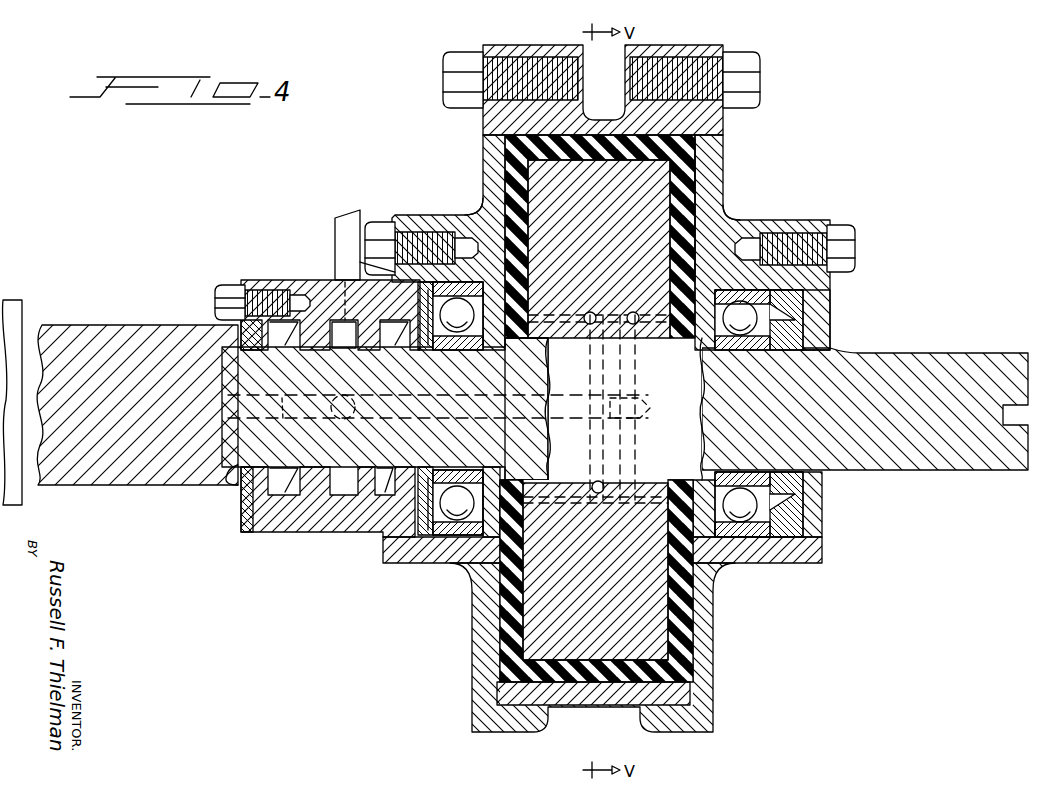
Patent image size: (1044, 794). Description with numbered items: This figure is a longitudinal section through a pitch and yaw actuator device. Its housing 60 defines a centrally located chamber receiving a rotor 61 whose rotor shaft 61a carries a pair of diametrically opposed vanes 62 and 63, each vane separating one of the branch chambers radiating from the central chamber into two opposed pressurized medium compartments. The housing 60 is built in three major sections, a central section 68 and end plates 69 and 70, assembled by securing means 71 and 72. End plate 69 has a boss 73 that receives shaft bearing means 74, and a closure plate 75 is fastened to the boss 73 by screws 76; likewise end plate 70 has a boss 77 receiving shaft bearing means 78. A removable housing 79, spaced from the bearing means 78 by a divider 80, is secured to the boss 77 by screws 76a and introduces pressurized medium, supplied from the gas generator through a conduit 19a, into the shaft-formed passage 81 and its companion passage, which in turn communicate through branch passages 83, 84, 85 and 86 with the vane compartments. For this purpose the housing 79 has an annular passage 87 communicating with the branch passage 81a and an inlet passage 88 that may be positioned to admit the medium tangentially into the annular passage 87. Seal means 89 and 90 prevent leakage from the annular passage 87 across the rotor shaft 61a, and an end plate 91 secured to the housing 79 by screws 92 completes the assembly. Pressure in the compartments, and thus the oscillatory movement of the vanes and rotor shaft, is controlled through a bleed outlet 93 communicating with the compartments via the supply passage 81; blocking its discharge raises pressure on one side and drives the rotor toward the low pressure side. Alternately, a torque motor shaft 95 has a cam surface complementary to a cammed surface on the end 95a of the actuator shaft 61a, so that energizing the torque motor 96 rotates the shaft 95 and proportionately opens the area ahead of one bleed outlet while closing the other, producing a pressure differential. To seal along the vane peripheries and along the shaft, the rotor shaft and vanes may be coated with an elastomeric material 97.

The housing 60 is at (468, 180).
The rotor 61 is at (540, 336).
The rotor shaft 61a is at (524, 409).
The vane 62 is at (668, 183).
The vane 63 is at (652, 612).
The central section 68 is at (678, 58).
The end plate 69 is at (725, 140).
The end plate 70 is at (483, 138).
The securing means 71 is at (445, 74).
The securing means 72 is at (745, 82).
The boss 73 is at (698, 222).
The shaft bearing means 74 is at (745, 320).
The closure plate 75 is at (815, 294).
The screws 76 is at (838, 245).
The screws 76a is at (383, 222).
The boss 77 is at (425, 222).
The shaft bearing means 78 is at (455, 408).
The removable housing 79 is at (318, 282).
The conduit 19a is at (345, 226).
The divider 80 is at (385, 268).
The passage 81 is at (382, 397).
The branch passage 81a is at (350, 417).
The branch passage 83 is at (590, 373).
The branch passage 84 is at (636, 368).
The branch passage 85 is at (638, 453).
The branch passage 86 is at (590, 455).
The annular passage 87 is at (344, 335).
The inlet passage 88 is at (343, 288).
The seal means 89 is at (244, 326).
The seal means 90 is at (410, 347).
The end plate 91 is at (250, 287).
The screws 92 is at (236, 290).
The bleed outlet 93 is at (283, 416).
The torque motor shaft 95 is at (143, 472).
The end of actuator shaft 95a is at (214, 472).
The torque motor 96 is at (22, 300).
The elastomeric material 97 is at (700, 208).